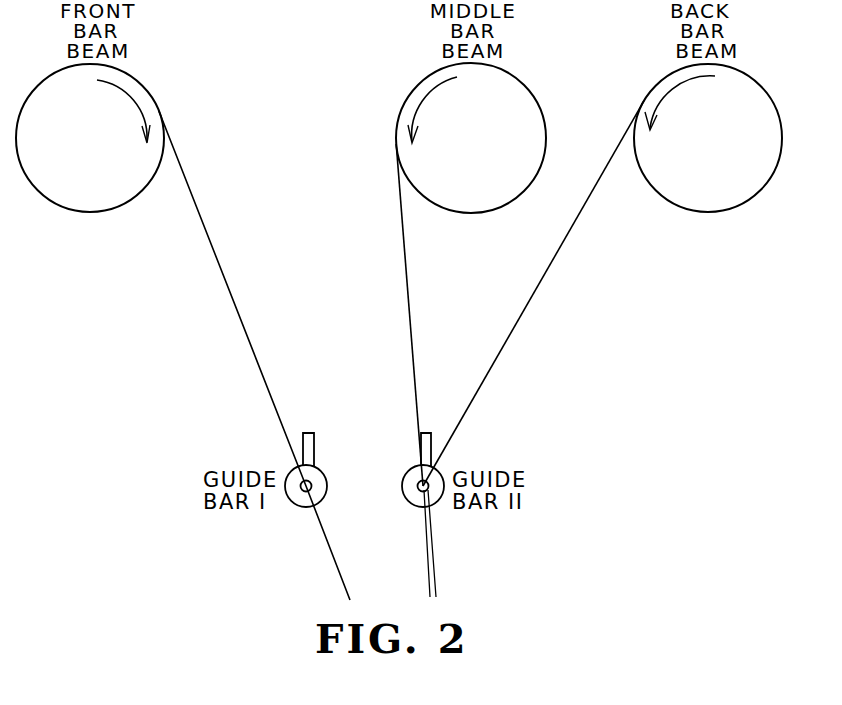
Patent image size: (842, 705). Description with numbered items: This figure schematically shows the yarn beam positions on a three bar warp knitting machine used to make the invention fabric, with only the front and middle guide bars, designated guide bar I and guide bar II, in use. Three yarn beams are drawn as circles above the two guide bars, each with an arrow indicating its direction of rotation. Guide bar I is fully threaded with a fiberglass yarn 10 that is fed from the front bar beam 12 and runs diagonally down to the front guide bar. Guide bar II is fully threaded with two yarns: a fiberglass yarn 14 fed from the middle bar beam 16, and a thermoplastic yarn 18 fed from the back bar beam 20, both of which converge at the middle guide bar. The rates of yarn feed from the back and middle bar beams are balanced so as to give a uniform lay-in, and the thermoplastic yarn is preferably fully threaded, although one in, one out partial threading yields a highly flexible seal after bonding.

The fiberglass yarn 10 is at (209, 235).
The front bar beam 12 is at (107, 216).
The fiberglass yarn 14 is at (403, 237).
The middle bar beam 16 is at (477, 214).
The thermoplastic yarn 18 is at (570, 228).
The back bar beam 20 is at (712, 214).